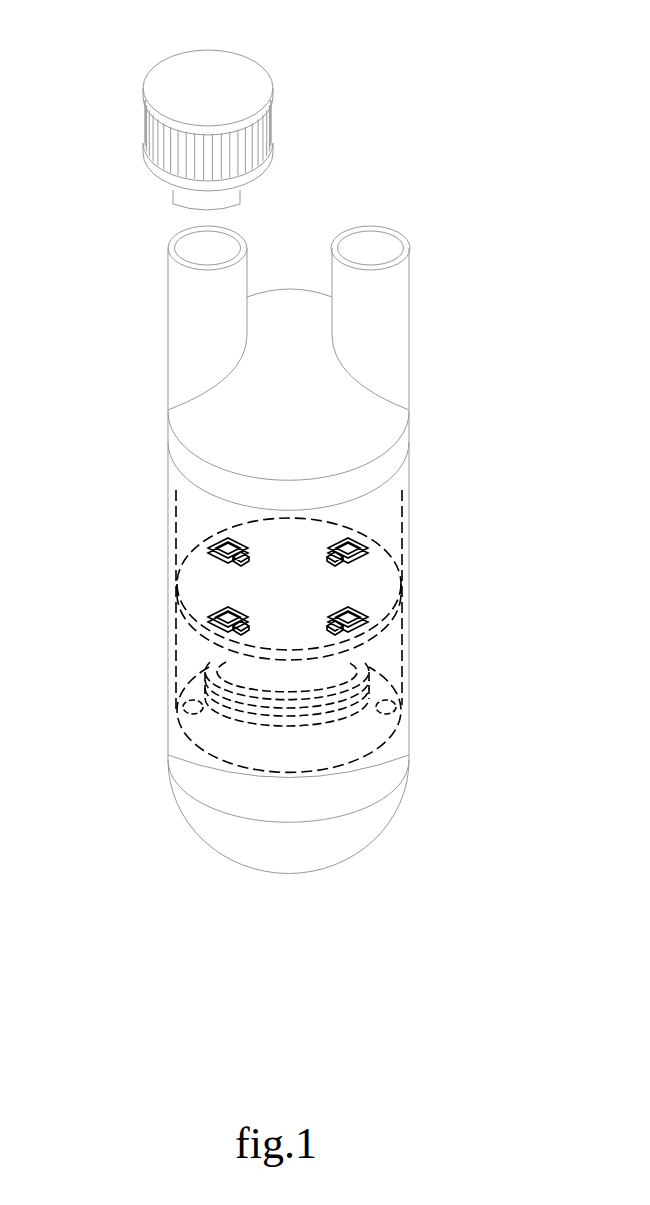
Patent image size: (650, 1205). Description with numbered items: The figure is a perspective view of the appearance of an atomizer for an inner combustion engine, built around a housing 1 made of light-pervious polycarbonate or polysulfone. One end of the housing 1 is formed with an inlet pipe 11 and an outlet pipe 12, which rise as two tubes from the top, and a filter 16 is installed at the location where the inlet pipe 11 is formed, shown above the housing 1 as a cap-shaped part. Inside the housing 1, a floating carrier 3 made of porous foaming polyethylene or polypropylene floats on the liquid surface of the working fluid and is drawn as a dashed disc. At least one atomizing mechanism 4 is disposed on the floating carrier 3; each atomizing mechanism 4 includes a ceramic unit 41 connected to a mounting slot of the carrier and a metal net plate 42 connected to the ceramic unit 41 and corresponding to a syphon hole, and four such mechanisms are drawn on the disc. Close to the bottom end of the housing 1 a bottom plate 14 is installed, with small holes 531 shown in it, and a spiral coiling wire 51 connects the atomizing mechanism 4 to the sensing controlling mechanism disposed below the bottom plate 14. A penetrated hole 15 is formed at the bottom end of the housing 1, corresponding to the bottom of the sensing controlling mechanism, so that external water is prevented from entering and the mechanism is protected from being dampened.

The housing 1 is at (462, 475).
The inlet pipe 11 is at (180, 295).
The outlet pipe 12 is at (397, 297).
The bottom plate 14 is at (220, 748).
The penetrated hole 15 is at (286, 873).
The filter 16 is at (163, 93).
The floating carrier 3 is at (401, 571).
The atomizing mechanism 4 is at (177, 600).
The ceramic unit 41 is at (220, 607).
The metal net plate 42 is at (237, 600).
The spiral coiling wire 51 is at (207, 677).
The through hole 531 is at (190, 703).